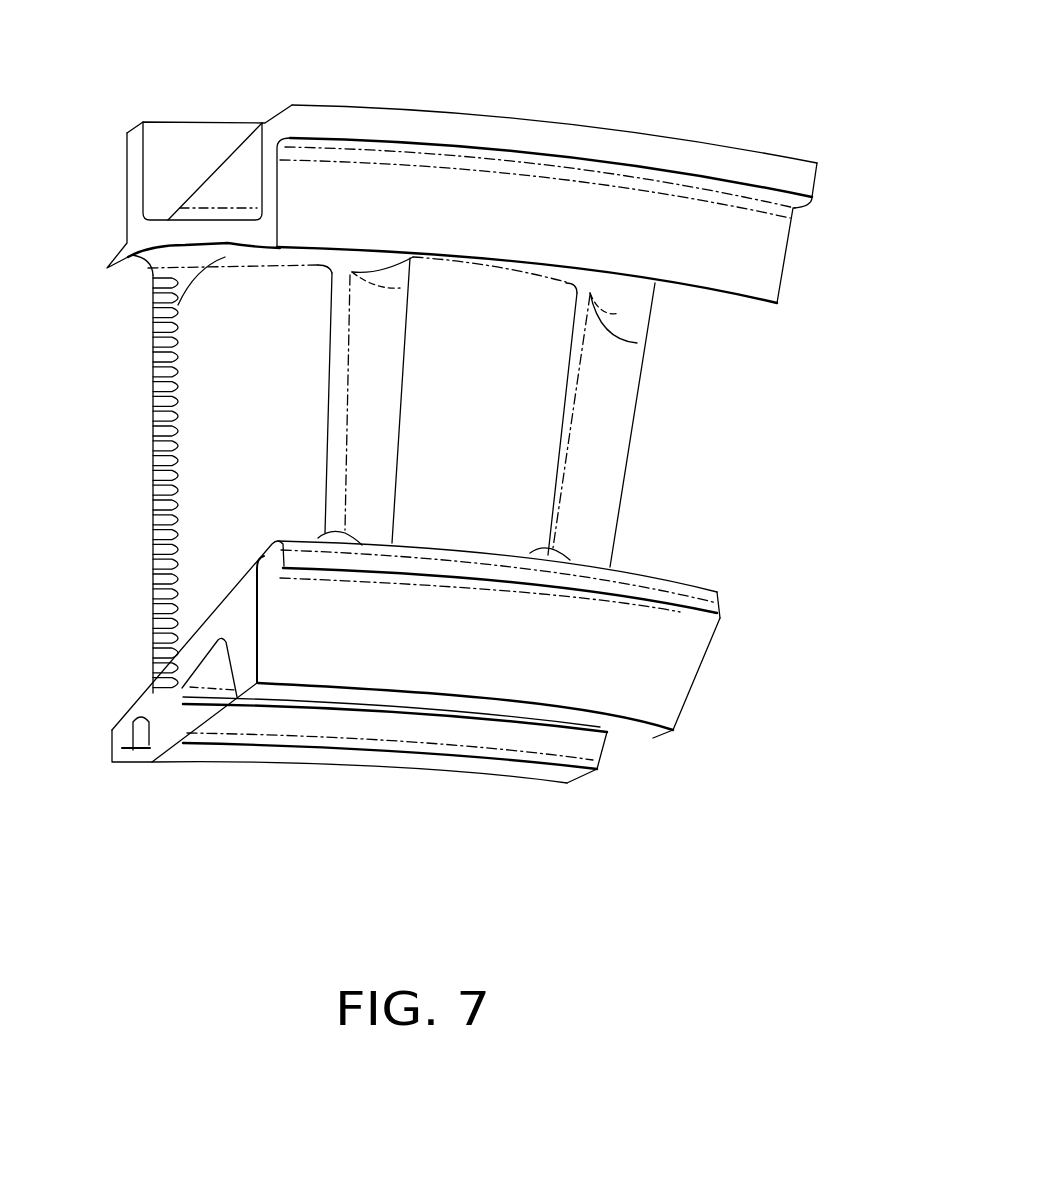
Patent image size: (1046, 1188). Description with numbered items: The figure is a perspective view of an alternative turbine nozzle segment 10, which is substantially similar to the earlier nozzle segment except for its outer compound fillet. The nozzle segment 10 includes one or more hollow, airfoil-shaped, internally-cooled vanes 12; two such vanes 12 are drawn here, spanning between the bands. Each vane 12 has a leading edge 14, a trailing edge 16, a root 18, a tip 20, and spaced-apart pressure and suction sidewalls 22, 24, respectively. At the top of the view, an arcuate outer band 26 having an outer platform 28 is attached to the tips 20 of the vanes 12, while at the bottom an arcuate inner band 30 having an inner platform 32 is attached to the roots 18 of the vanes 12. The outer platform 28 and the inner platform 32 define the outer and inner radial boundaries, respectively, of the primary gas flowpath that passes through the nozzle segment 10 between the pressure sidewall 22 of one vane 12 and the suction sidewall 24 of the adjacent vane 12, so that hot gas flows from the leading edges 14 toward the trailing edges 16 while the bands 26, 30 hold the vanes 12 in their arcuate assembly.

The nozzle segment 10 is at (610, 107).
The vane 12 is at (220, 351).
The leading edge 14 is at (387, 428).
The trailing edge 16 is at (153, 470).
The root 18 is at (612, 567).
The tip 20 is at (152, 304).
The pressure sidewall 22 is at (237, 407).
The suction sidewall 24 is at (623, 440).
The outer band 26 is at (783, 222).
The outer platform 28 is at (722, 293).
The inner band 30 is at (703, 623).
The inner platform 32 is at (690, 582).